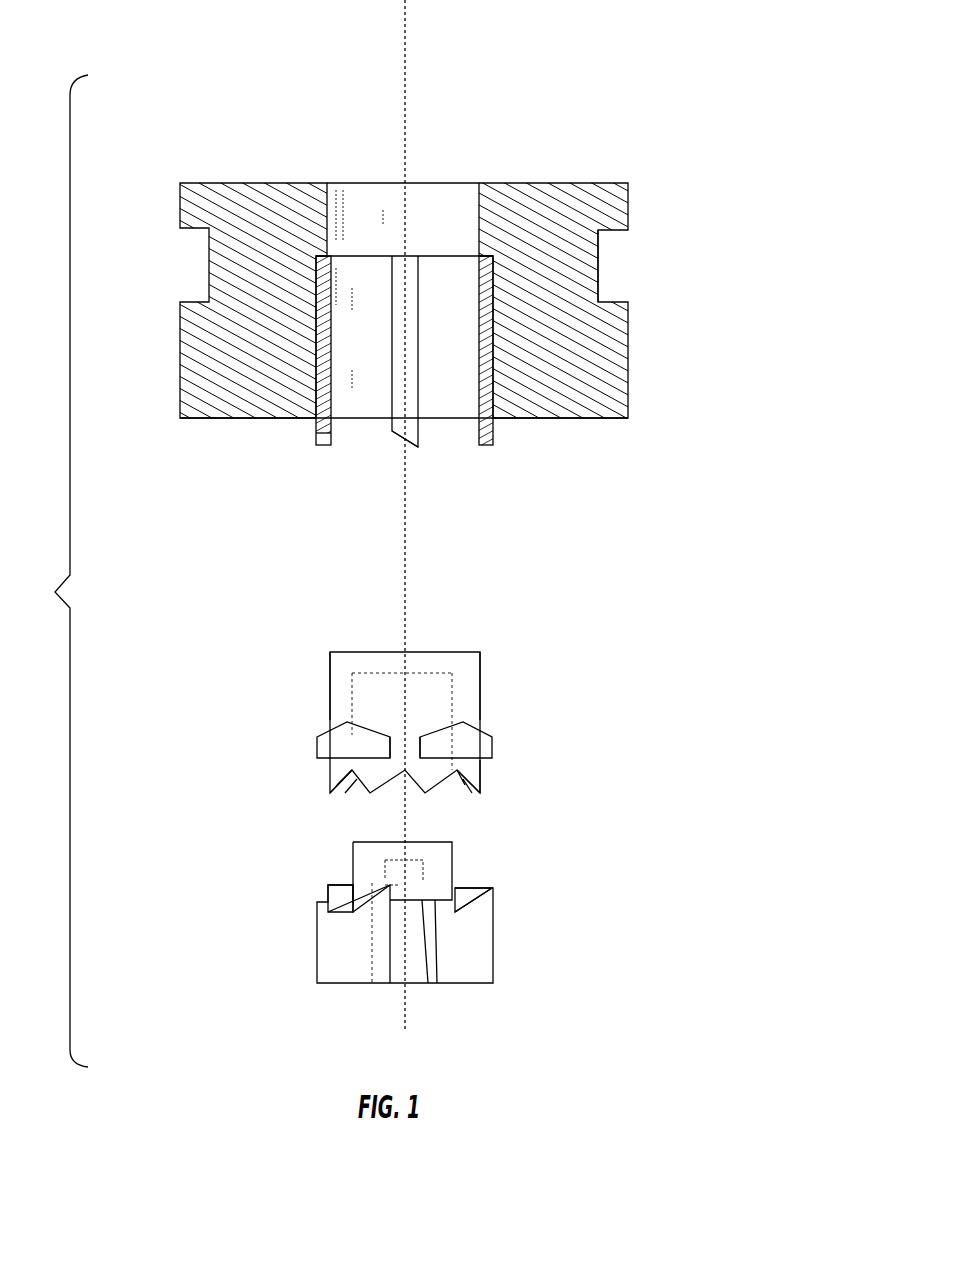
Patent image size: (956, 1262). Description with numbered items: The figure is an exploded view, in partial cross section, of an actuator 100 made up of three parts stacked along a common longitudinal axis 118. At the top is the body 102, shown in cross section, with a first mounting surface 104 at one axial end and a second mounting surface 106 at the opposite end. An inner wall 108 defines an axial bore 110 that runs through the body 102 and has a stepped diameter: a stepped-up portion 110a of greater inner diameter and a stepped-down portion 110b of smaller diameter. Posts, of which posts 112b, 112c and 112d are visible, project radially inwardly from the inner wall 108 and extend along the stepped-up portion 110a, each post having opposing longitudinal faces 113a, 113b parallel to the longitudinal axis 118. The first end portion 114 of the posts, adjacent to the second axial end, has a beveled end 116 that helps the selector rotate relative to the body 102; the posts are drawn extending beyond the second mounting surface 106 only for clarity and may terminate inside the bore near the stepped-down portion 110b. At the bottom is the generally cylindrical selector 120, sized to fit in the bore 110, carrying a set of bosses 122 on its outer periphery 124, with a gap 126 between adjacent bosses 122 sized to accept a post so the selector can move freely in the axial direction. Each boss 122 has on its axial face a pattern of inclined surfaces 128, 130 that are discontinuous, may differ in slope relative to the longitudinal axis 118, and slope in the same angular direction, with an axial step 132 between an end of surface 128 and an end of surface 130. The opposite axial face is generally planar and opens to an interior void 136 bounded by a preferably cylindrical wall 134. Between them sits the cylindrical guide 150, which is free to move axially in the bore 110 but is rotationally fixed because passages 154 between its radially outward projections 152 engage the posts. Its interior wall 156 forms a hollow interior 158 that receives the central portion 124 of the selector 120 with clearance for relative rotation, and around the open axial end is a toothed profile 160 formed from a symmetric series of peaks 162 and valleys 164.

The actuator 100 is at (52, 571).
The body 102 is at (658, 252).
The first mounting surface 104 is at (197, 183).
The second mounting surface 106 is at (610, 420).
The inner wall 108 is at (480, 210).
The axial bore 110 is at (393, 207).
The stepped-up portion 110a is at (447, 382).
The stepped-down portion 110b is at (392, 226).
The post 112b is at (330, 300).
The post 112c is at (419, 400).
The post 112d is at (494, 442).
The longitudinal face 113a is at (389, 293).
The longitudinal face 113b is at (420, 327).
The first end portion 114 is at (316, 431).
The beveled end 116 is at (397, 436).
The longitudinal axis 118 is at (406, 58).
The selector 120 is at (636, 858).
The boss 122 is at (320, 945).
The outer periphery 124 is at (452, 867).
The gap 126 is at (400, 973).
The inclined surface 128 is at (330, 903).
The inclined surface 130 is at (328, 893).
The axial step 132 is at (455, 905).
The wall 134 is at (380, 957).
The interior void 136 is at (380, 880).
The guide 150 is at (282, 695).
The radially outward projection 152 is at (325, 748).
The passage 154 is at (412, 740).
The interior wall 156 is at (357, 673).
The hollow interior 158 is at (432, 685).
The toothed profile 160 is at (343, 797).
The peak 162 is at (467, 797).
The valley 164 is at (480, 768).